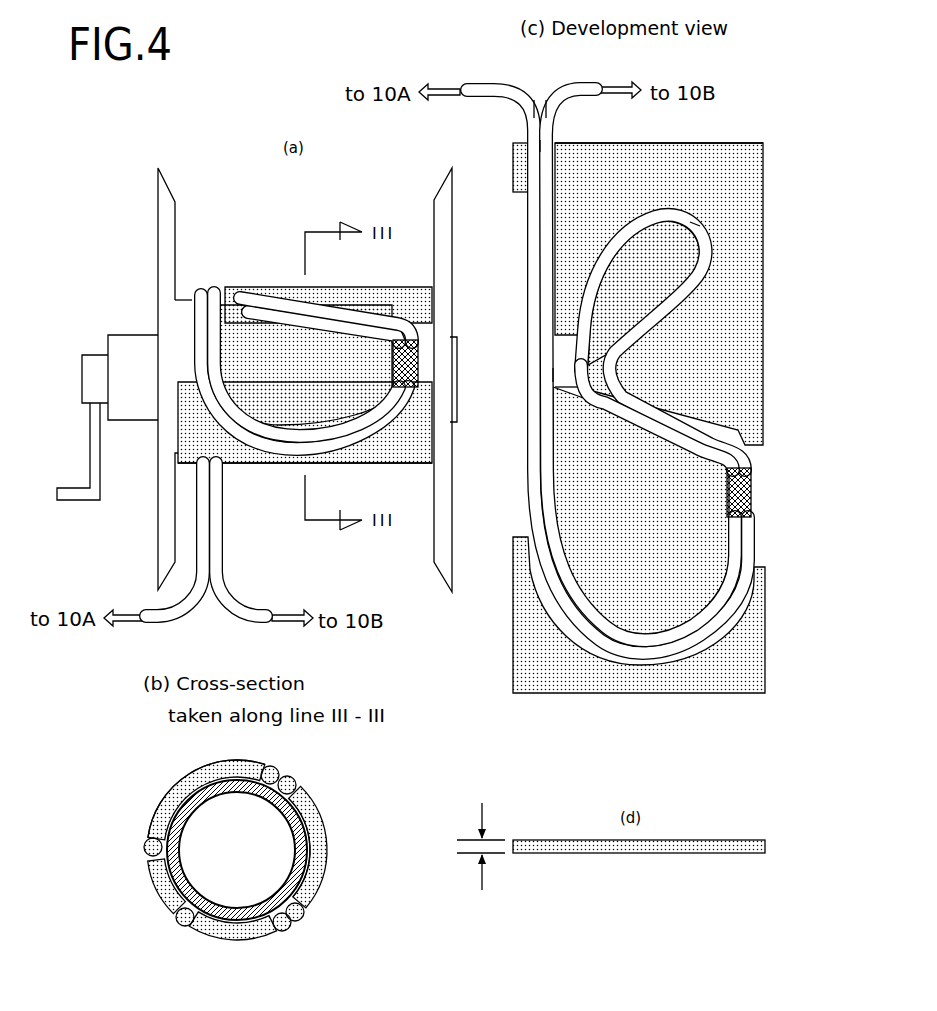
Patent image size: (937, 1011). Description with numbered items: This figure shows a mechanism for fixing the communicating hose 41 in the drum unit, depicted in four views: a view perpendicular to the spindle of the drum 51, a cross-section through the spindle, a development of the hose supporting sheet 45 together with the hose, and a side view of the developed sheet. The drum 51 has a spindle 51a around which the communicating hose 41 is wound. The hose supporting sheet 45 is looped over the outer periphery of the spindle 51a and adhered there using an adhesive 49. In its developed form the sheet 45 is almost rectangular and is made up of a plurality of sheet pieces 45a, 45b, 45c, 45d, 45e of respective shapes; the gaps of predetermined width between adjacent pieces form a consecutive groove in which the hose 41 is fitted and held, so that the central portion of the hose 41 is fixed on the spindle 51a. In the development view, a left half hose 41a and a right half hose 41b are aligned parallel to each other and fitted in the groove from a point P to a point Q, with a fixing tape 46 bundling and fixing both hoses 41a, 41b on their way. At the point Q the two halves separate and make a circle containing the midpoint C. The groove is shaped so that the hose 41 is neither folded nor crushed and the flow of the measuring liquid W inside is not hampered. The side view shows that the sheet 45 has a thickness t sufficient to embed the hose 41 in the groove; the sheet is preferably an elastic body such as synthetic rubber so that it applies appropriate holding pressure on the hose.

The communicating hose 41 is at (220, 578).
The left half hose 41a is at (505, 88).
The right half hose 41b is at (565, 88).
The hose supporting sheet 45 is at (257, 471).
The sheet piece 45a is at (516, 182).
The sheet piece 45b is at (319, 384).
The sheet piece 45c is at (424, 454).
The sheet piece 45d is at (424, 310).
The sheet piece 45e is at (160, 880).
The fixing tape 46 is at (420, 364).
The adhesive 49 is at (316, 830).
The drum 51 is at (154, 221).
The spindle 51a is at (186, 332).
The measuring liquid W is at (272, 768).
The point P is at (545, 140).
The point Q is at (556, 376).
The midpoint C is at (697, 230).
The thickness t is at (481, 846).